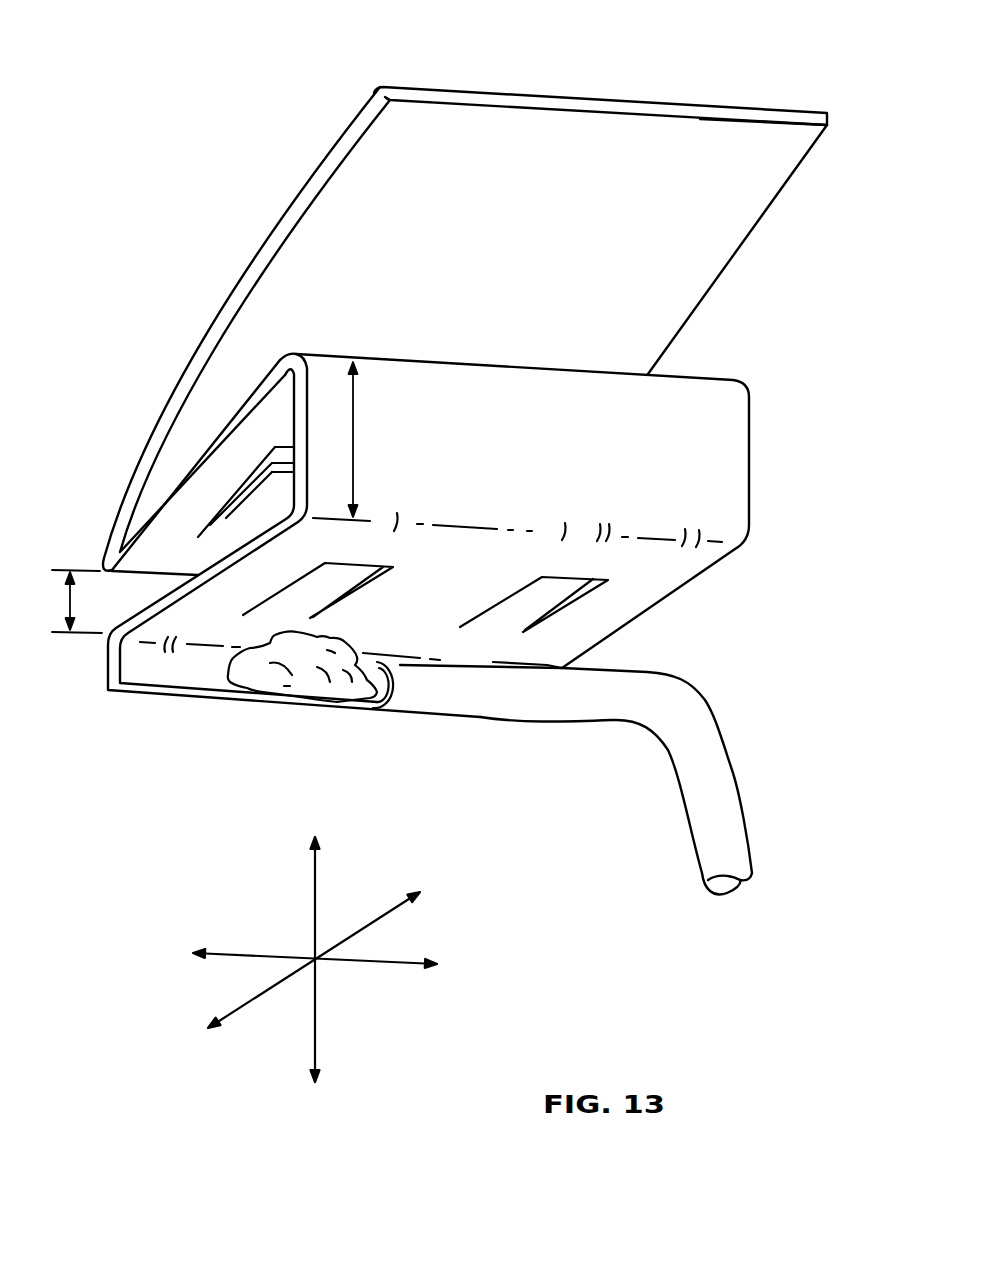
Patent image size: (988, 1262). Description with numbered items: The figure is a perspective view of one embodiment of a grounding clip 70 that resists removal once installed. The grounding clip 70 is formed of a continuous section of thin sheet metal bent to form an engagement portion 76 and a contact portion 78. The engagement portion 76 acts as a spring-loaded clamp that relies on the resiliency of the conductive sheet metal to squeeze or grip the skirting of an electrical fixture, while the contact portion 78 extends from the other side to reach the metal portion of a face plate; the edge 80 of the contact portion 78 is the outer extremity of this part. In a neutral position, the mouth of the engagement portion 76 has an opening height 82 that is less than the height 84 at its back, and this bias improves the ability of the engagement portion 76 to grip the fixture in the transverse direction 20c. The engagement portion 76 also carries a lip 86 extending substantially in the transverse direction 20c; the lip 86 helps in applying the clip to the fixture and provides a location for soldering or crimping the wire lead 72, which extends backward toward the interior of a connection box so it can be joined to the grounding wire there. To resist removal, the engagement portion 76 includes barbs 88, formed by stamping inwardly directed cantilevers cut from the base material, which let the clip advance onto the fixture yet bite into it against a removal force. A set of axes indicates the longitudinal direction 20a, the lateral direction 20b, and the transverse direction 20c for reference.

The grounding clip 70 is at (193, 78).
The wire lead 72 is at (732, 848).
The engagement portion 76 is at (772, 525).
The contact portion 78 is at (766, 254).
The distal edge of flap 80 is at (793, 142).
The opening height 82 is at (70, 600).
The height 84 is at (353, 438).
The lip 86 is at (178, 673).
The barbs 88 is at (270, 487).
The longitudinal direction 20a is at (397, 967).
The lateral direction 20b is at (398, 908).
The transverse direction 20c is at (317, 892).